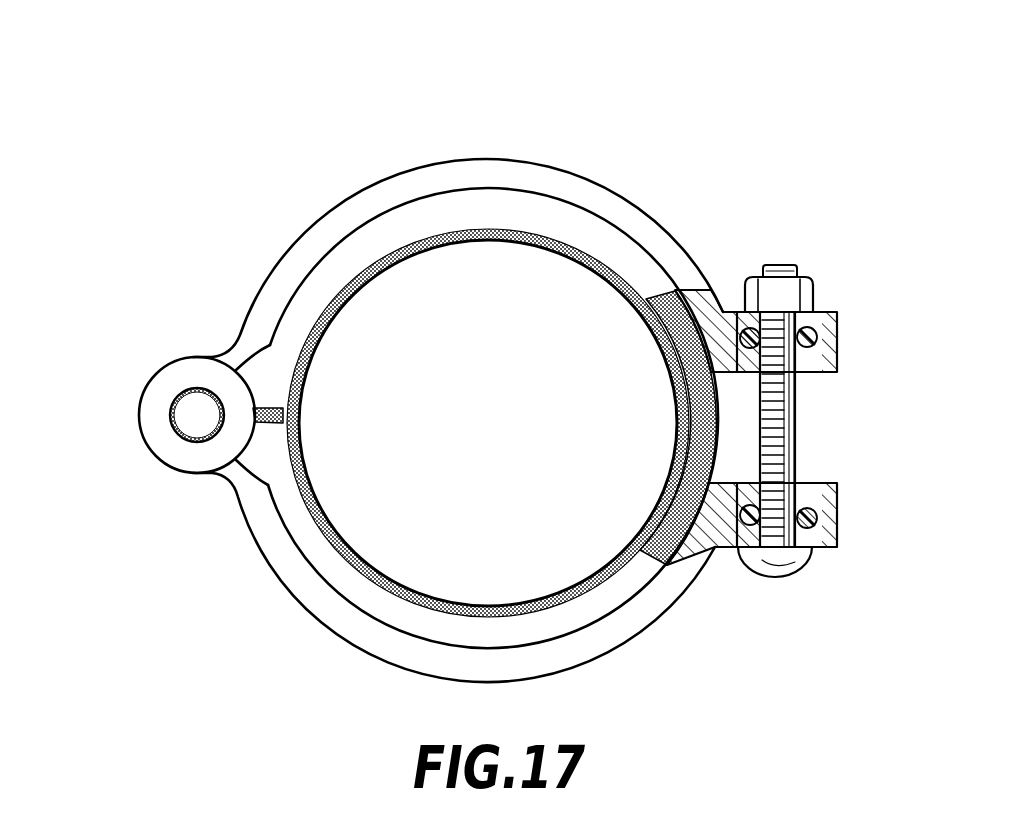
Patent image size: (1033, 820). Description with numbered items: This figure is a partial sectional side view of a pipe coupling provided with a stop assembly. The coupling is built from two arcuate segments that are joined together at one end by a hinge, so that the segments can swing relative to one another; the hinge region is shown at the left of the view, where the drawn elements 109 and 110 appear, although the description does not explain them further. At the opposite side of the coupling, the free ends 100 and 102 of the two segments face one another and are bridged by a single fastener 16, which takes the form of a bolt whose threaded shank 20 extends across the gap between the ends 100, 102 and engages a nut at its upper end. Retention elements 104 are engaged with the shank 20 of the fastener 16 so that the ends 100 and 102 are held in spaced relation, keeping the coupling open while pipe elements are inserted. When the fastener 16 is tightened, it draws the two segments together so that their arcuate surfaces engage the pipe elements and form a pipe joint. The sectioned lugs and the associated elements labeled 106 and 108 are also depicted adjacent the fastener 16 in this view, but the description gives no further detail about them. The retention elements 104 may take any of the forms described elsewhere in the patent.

The end 100 is at (640, 167).
The end 102 is at (423, 166).
The retention elements 104 is at (313, 617).
The upper lug 106 is at (835, 333).
The lower lug 108 is at (835, 513).
The hinge pin bore 109 is at (182, 418).
The bolt end / washer 110 is at (803, 500).
The fastener 16 is at (797, 453).
The threaded shank 20 is at (797, 388).